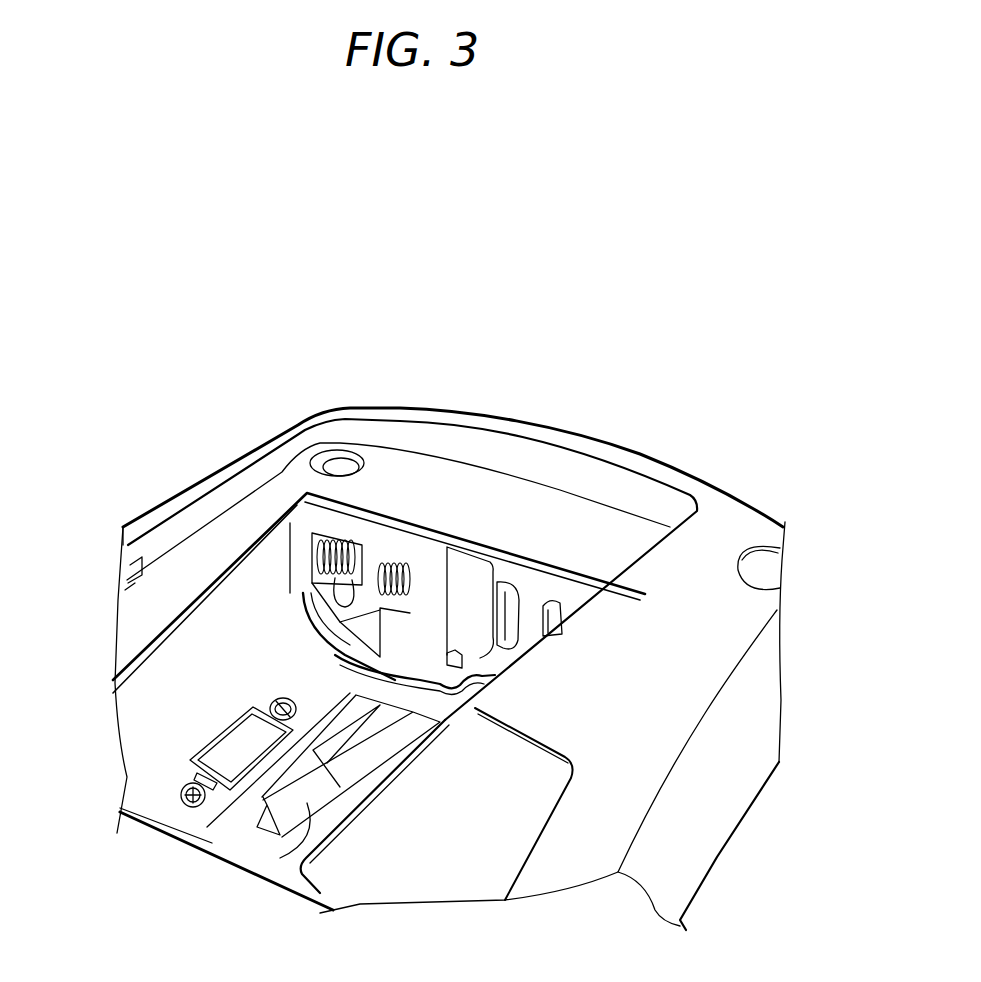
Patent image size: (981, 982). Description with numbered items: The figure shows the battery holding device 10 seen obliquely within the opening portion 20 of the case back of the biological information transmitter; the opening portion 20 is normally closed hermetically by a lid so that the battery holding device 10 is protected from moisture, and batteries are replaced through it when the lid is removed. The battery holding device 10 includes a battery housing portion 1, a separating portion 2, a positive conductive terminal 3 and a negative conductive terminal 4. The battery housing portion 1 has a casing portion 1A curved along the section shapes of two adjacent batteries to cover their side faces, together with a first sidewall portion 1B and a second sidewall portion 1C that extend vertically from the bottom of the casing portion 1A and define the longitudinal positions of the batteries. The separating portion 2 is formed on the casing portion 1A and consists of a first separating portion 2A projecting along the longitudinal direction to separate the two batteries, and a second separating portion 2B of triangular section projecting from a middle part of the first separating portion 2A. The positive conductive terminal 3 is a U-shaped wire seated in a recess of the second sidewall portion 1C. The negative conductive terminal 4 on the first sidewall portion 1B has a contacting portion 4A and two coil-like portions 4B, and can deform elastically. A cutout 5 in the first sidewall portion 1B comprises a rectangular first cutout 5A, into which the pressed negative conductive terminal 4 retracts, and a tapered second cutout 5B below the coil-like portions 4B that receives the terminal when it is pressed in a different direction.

The battery housing portion 1 is at (120, 460).
The casing portion 1A is at (247, 570).
The first sidewall portion 1B is at (313, 508).
The second sidewall portion 1C is at (472, 563).
The separating portion 2 is at (158, 898).
The first separating portion 2A is at (250, 837).
The second separating portion 2B is at (261, 845).
The positive conductive terminal 3 is at (548, 597).
The negative conductive terminal 4 is at (358, 350).
The contacting portion 4A is at (333, 537).
The coil-like portion 4B is at (393, 560).
The cutout 5 is at (60, 640).
The first cutout 5A is at (367, 637).
The second cutout 5B is at (317, 607).
The battery holding device 10 is at (428, 514).
The opening portion 20 is at (555, 470).